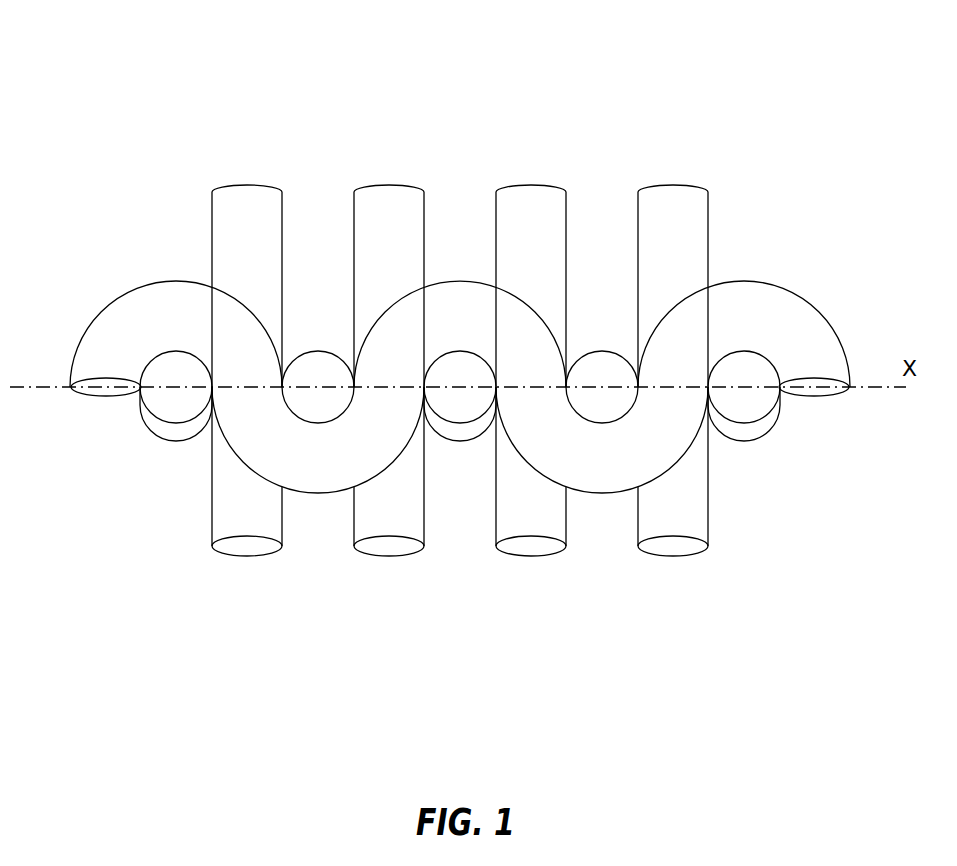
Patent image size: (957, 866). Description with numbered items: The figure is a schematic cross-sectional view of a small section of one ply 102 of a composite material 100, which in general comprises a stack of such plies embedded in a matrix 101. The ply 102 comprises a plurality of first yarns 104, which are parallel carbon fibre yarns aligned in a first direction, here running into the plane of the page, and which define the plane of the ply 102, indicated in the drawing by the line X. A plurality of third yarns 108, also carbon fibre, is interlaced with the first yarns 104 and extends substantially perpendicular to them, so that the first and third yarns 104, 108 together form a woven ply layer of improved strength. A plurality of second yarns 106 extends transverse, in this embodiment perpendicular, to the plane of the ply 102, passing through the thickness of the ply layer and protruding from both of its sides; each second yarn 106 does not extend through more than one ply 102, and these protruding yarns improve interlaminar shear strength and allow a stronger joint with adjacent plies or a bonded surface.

The composite material 100 is at (128, 91).
The matrix 101 is at (323, 193).
The ply 102 is at (145, 239).
The first yarns 104 is at (172, 430).
The second yarns 106 is at (247, 212).
The third yarns 108 is at (762, 313).